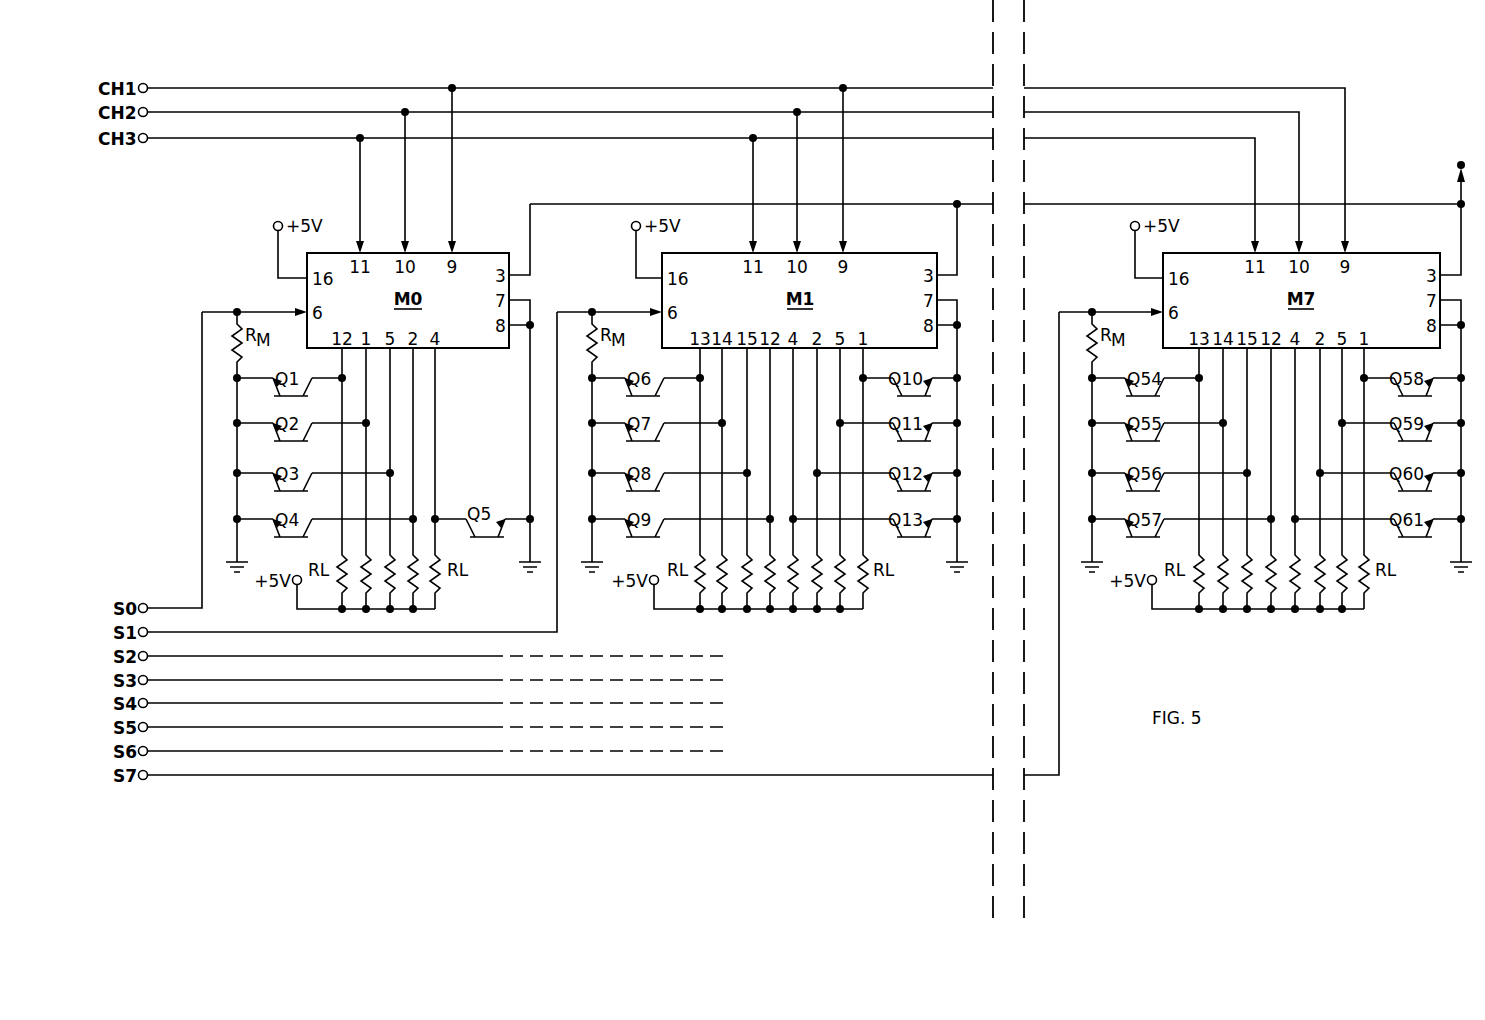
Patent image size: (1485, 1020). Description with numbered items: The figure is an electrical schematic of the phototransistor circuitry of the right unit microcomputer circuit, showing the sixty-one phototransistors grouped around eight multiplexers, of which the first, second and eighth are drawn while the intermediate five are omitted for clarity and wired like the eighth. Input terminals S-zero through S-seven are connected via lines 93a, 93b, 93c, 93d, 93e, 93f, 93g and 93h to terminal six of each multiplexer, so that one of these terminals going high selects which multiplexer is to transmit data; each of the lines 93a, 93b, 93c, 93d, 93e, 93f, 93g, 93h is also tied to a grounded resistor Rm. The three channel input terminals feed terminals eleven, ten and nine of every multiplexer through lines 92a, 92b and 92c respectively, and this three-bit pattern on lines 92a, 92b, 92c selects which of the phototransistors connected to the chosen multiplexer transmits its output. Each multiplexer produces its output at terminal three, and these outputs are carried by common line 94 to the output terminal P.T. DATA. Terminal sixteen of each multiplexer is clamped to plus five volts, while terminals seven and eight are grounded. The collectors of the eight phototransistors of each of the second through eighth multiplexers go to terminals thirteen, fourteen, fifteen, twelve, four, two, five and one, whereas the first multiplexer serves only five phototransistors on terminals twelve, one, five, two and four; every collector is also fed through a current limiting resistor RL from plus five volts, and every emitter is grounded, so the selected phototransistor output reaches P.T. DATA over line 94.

The line 92a is at (560, 87).
The line 92b is at (575, 111).
The line 92c is at (598, 137).
The line 94 is at (905, 203).
The line 93a is at (202, 430).
The line 93b is at (283, 632).
The line 93c is at (295, 656).
The line 93d is at (308, 680).
The line 93e is at (322, 703).
The line 93f is at (335, 727).
The line 93g is at (347, 751).
The line 93h is at (358, 775).